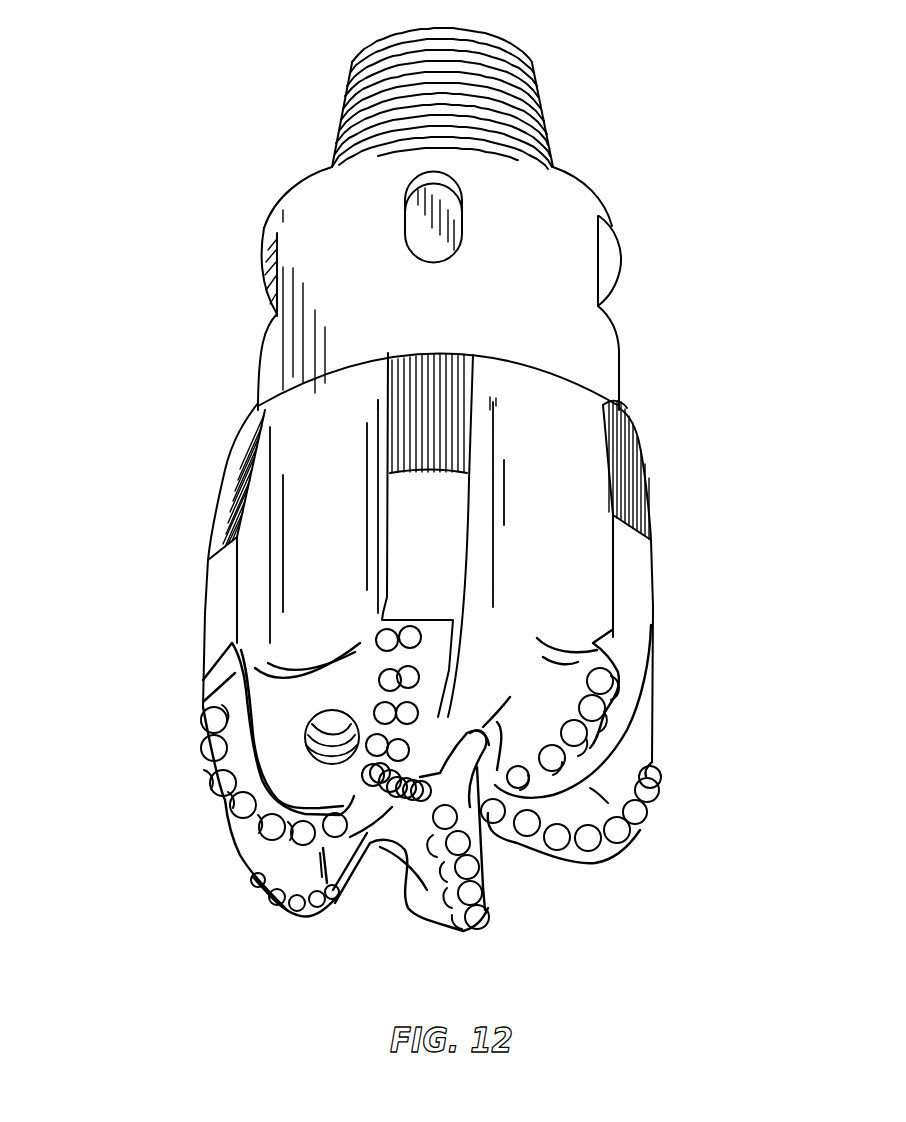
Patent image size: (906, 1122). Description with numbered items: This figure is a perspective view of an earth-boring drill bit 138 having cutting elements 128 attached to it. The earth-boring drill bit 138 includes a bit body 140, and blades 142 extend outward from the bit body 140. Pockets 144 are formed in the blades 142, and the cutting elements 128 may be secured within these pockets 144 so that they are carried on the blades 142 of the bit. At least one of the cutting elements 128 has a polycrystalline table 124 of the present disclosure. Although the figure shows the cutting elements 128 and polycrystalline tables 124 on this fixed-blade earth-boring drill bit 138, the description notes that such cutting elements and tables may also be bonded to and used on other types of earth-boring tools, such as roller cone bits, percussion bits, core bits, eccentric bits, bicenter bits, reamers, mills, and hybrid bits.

The earth-boring drill bit 138 is at (160, 123).
The bit body 140 is at (293, 485).
The pockets 144 is at (220, 700).
The cutting elements 128 is at (222, 783).
The blades 142 is at (288, 868).
The polycrystalline table 124 is at (487, 905).